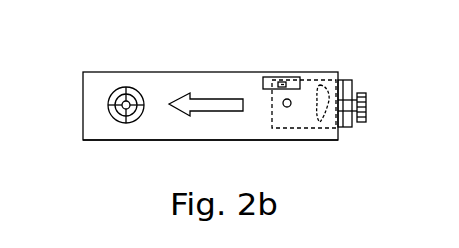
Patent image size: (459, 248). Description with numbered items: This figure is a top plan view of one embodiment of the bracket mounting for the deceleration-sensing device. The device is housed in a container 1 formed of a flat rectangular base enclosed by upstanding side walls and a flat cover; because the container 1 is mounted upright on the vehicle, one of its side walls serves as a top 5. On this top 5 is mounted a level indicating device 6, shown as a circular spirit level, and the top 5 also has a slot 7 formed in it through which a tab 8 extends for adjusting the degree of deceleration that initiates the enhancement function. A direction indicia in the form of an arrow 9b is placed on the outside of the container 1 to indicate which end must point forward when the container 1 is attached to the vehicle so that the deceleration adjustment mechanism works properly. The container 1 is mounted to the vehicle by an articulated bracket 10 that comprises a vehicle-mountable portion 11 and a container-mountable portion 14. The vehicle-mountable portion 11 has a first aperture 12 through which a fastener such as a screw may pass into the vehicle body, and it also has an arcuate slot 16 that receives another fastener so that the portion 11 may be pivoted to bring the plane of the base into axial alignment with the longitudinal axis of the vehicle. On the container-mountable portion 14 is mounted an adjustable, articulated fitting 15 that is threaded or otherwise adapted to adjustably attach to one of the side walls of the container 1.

The container 1 is at (90, 82).
The top 5 is at (143, 127).
The level indicating device 6 is at (118, 114).
The slot 7 is at (295, 83).
The tab 8 is at (283, 84).
The arrow 9b is at (182, 99).
The articulated bracket 10 is at (352, 124).
The vehicle-mountable portion 11 is at (278, 115).
The first aperture 12 is at (290, 108).
The container-mountable portion 14 is at (352, 78).
The articulated fitting 15 is at (368, 103).
The arcuate slot 16 is at (323, 113).